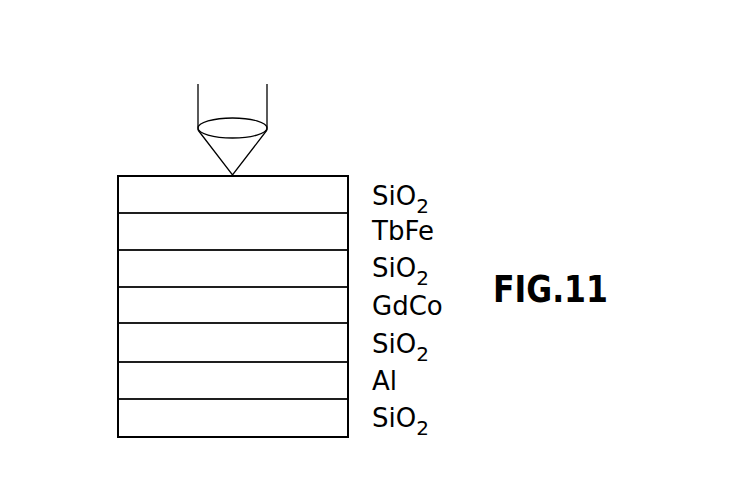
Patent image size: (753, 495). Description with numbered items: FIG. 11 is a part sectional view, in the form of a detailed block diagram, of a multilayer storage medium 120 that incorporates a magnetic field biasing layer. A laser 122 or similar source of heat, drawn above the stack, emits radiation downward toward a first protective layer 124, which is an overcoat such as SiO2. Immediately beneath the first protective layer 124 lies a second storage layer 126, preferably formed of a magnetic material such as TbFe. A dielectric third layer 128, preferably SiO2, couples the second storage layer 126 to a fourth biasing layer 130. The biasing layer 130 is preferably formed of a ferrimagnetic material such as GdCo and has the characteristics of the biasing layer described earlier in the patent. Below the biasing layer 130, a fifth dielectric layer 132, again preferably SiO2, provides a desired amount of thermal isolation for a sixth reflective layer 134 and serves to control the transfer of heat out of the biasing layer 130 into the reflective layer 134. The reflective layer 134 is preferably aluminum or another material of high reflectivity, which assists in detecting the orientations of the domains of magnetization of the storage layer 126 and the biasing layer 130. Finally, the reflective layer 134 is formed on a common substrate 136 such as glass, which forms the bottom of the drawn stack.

The storage medium 120 is at (388, 141).
The laser 122 is at (255, 100).
The first protective layer 124 is at (157, 178).
The second storage layer 126 is at (120, 231).
The dielectric third layer 128 is at (123, 273).
The fourth biasing layer 130 is at (128, 313).
The fifth dielectric layer 132 is at (120, 333).
The sixth reflective layer 134 is at (120, 382).
The common substrate 136 is at (120, 427).